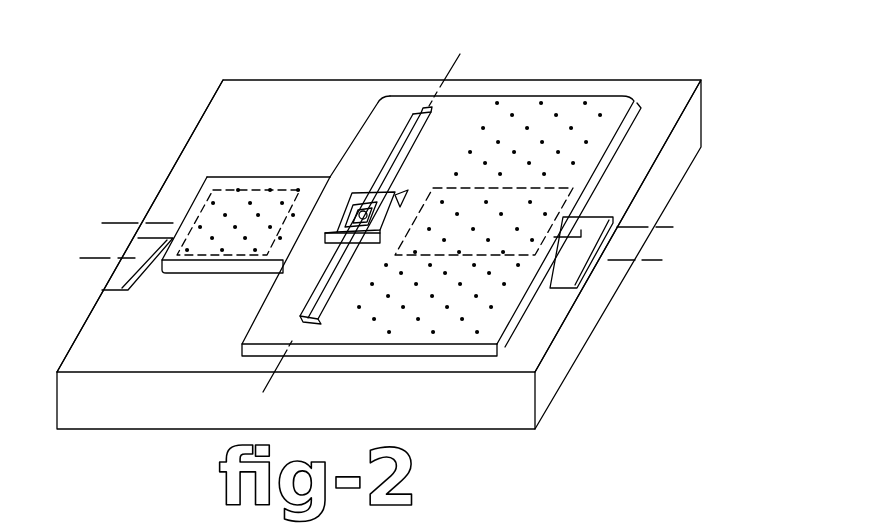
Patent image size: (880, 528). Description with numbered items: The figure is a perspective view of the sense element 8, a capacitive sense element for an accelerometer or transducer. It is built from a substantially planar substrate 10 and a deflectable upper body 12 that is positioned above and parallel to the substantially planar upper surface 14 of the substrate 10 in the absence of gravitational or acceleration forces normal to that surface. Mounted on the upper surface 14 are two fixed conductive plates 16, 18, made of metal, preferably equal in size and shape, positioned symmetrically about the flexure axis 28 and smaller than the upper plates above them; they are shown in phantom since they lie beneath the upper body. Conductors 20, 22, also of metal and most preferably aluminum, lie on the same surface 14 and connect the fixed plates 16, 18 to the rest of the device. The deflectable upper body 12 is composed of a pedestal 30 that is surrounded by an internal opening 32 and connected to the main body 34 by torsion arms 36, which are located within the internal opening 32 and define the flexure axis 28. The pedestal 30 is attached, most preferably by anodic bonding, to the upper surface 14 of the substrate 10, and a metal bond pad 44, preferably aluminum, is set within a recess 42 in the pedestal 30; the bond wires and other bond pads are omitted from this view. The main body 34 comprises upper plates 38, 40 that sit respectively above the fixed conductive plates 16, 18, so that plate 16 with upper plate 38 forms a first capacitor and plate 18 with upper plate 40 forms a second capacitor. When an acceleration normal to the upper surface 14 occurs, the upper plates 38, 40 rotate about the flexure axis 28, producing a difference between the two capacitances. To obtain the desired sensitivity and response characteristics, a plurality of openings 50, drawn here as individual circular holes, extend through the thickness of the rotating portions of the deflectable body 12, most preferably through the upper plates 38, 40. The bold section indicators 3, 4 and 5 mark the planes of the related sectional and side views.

The sense element 8 is at (687, 51).
The substrate 10 is at (558, 361).
The deflectable upper body 12 is at (643, 105).
The upper surface 14 is at (97, 331).
The fixed conductive plate 16 is at (241, 188).
The fixed conductive plate 18 is at (578, 186).
The conductor 20 is at (600, 218).
The conductor 22 is at (130, 248).
The flexure axis 28 is at (460, 54).
The pedestal 30 is at (360, 192).
The internal opening 32 is at (366, 263).
The main body 34 is at (377, 106).
The torsion arms 36 is at (433, 113).
The upper plate 38 is at (213, 190).
The upper plate 40 is at (607, 98).
The recess 42 is at (350, 213).
The bond pad 44 is at (392, 200).
The openings 50 is at (284, 202).
The section line 3- 3 is at (460, 55).
The section line 4- 4 is at (135, 180).
The section line 5- 5 is at (87, 260).